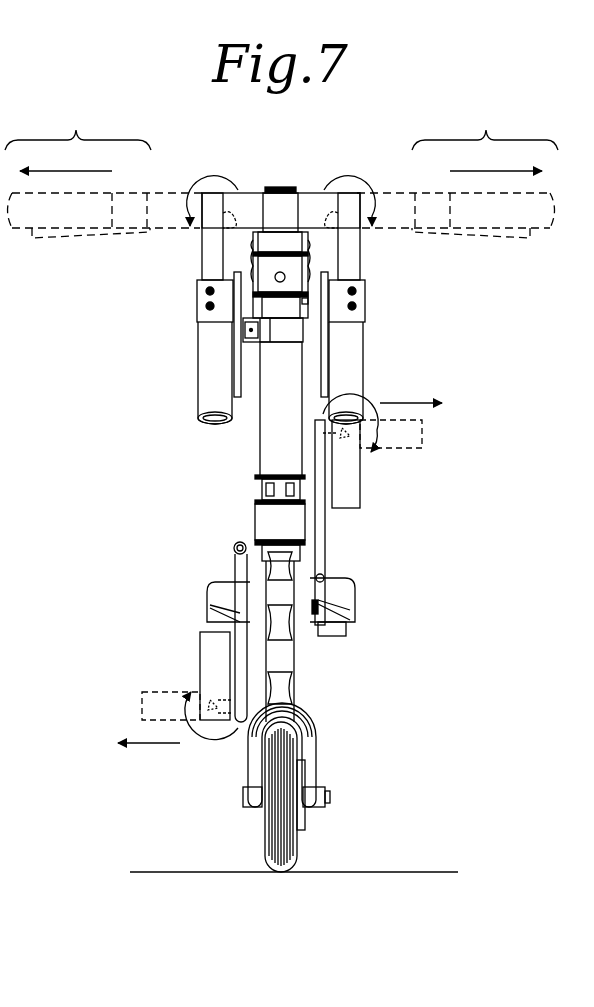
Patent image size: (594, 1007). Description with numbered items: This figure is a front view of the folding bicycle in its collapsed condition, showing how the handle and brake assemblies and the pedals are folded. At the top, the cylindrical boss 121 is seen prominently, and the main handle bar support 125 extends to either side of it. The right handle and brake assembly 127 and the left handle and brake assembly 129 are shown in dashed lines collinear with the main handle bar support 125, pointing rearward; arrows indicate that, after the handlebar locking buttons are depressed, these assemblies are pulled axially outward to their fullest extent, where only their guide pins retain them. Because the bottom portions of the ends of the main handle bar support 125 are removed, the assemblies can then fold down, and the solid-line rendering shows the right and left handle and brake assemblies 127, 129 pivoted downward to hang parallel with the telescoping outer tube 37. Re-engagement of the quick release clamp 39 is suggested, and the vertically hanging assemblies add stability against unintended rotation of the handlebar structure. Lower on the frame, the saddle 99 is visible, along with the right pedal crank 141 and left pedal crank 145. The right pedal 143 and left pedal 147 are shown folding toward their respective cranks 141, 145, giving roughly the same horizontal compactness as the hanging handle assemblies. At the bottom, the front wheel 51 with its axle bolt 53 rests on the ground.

The left handle and brake assembly 129 is at (105, 167).
The right handle and brake assembly 127 is at (457, 167).
The boss 121 is at (282, 186).
The main handle bar support 125 is at (312, 198).
The quick release clamp 39 is at (293, 332).
The telescoping outer tube 37 is at (270, 440).
The left pedal 147 is at (422, 421).
The left pedal crank 145 is at (325, 533).
The saddle 99 is at (352, 582).
The right pedal crank 141 is at (233, 572).
The right pedal 143 is at (200, 642).
The axle bolt 53 is at (328, 797).
The front wheel 51 is at (298, 855).